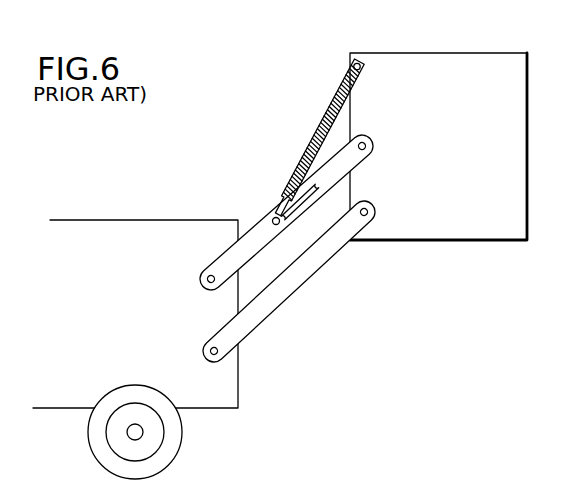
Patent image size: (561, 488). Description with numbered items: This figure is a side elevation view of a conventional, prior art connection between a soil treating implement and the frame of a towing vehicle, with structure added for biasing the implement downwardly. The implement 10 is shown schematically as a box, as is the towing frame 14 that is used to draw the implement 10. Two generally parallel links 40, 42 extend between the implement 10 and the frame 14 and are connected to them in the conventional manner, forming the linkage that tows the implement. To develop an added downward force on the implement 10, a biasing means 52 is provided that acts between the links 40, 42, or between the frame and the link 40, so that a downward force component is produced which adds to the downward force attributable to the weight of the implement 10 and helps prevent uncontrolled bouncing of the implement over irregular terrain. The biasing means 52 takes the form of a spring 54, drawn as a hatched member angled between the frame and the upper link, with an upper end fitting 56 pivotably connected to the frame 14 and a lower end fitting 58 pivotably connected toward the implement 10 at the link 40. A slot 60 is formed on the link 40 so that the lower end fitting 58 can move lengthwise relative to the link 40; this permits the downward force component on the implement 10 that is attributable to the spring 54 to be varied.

The implement 10 is at (146, 309).
The towing frame 14 is at (456, 146).
The link 40 is at (262, 231).
The link 42 is at (267, 312).
The biasing means 52 is at (323, 101).
The spring 54 is at (310, 145).
The upper end fitting 56 is at (361, 67).
The lower end fitting 58 is at (279, 224).
The slot 60 is at (316, 188).